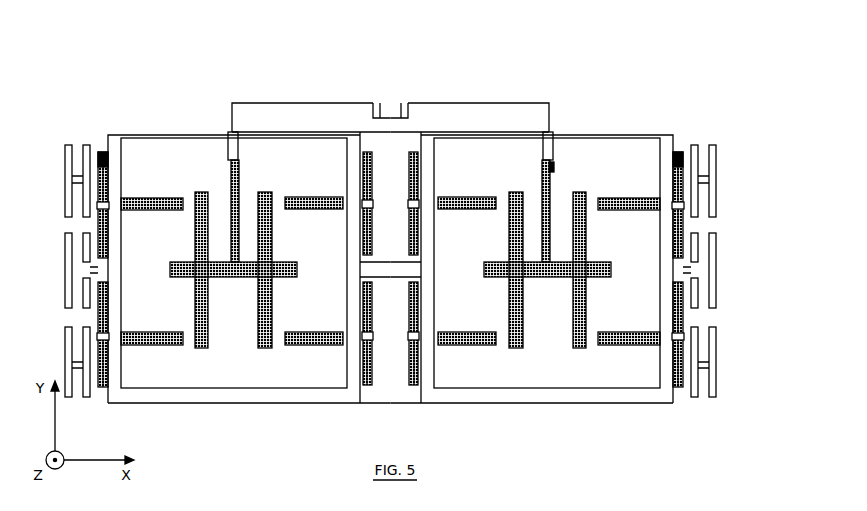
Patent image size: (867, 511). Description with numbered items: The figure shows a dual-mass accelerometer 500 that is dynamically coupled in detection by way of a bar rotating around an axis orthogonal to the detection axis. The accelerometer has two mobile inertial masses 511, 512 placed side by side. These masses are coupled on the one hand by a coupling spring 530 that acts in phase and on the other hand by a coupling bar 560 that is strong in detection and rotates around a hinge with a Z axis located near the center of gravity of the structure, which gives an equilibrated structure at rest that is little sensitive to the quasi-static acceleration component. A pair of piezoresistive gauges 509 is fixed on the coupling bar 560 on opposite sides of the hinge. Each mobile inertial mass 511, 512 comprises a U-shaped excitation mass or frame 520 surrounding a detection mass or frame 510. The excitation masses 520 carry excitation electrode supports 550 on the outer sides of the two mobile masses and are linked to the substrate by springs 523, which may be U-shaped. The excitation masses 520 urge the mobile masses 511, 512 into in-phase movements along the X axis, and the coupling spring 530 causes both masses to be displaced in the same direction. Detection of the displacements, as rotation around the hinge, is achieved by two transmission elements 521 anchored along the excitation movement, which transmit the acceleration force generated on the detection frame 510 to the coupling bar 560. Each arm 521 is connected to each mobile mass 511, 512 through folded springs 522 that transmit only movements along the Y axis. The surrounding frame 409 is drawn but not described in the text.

The dual-mass accelerometer 500 is at (397, 70).
The frame 409 is at (390, 114).
The piezoresistive gauges 509 is at (380, 101).
The coupling bar 560 is at (493, 111).
The coupling spring 530 is at (395, 280).
The first mobile inertial mass 511 is at (146, 130).
The second mobile inertial mass 512 is at (582, 132).
The detection mass 510 is at (138, 323).
The springs 522 is at (247, 270).
The transmission elements 521 is at (235, 238).
The springs 523 is at (104, 157).
The excitation mass 520 is at (98, 270).
The excitation electrode supports 550 is at (64, 271).